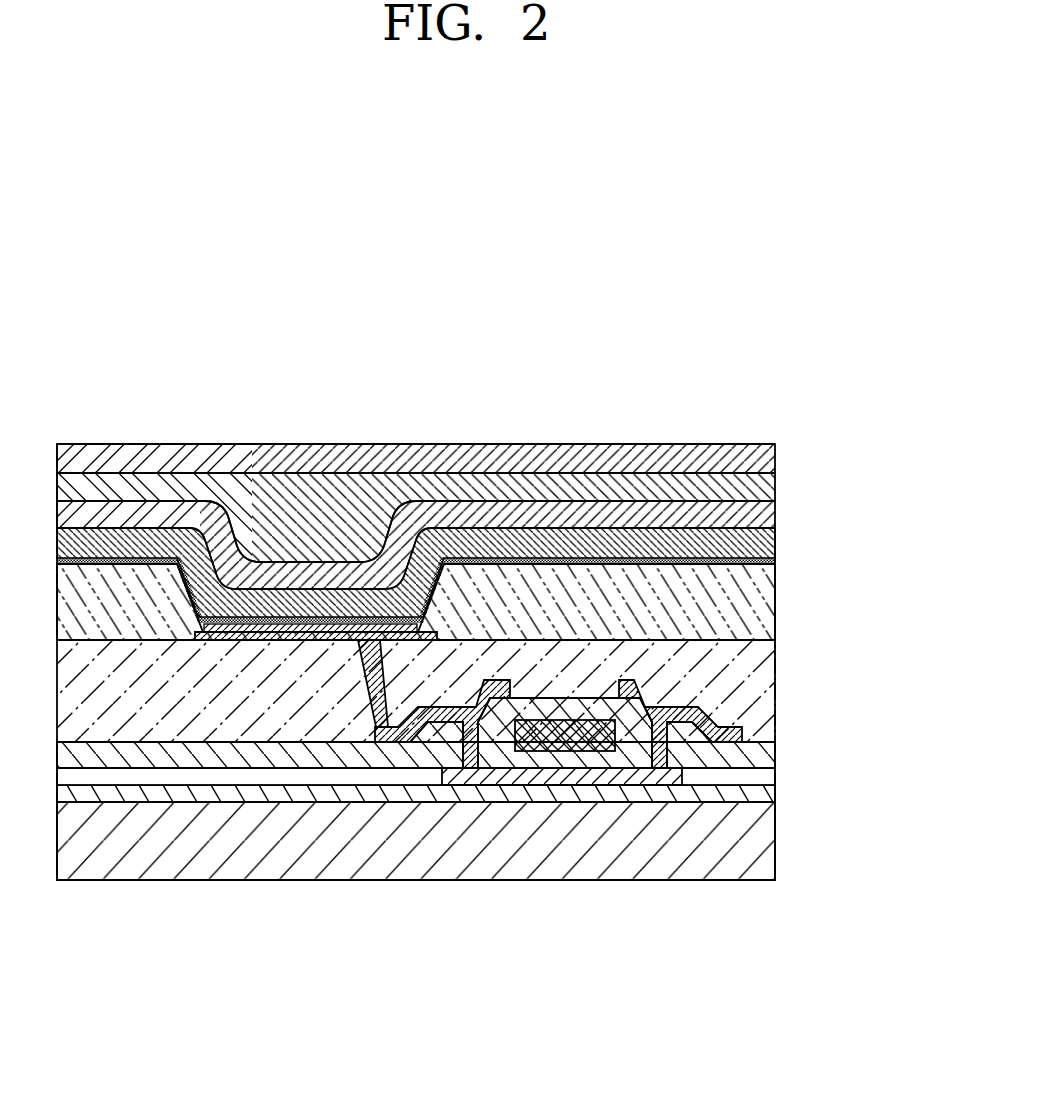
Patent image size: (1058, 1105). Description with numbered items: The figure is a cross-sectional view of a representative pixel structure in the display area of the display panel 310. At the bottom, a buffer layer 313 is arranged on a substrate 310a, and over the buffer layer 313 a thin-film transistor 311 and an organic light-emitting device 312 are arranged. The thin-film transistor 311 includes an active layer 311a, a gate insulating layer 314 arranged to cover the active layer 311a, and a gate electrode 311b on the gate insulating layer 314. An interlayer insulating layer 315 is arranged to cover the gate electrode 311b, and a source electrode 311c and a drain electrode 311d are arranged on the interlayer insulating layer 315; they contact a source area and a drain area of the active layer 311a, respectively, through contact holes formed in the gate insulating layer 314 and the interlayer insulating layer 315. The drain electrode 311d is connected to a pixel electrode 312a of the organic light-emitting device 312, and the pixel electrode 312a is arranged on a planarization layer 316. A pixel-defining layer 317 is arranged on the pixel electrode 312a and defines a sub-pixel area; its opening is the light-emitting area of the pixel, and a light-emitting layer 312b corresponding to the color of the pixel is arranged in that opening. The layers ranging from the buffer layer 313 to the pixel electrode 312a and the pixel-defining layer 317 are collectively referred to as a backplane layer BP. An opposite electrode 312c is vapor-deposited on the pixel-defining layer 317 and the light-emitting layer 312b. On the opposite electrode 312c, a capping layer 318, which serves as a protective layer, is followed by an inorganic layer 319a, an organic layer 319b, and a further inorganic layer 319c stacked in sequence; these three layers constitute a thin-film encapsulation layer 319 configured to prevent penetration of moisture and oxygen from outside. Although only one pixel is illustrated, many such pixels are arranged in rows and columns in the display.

The display panel 310 is at (782, 404).
The substrate 310a is at (762, 850).
The thin-film transistor 311 is at (558, 660).
The active layer 311a is at (528, 775).
The gate electrode 311b is at (583, 751).
The source electrode 311c is at (660, 752).
The drain electrode 311d is at (457, 756).
The organic light-emitting device 312 is at (416, 555).
The pixel electrode 312a is at (318, 636).
The light-emitting layer 312b is at (360, 637).
The opposite electrode 312c is at (512, 558).
The buffer layer 313 is at (762, 796).
The gate insulating layer 314 is at (762, 776).
The interlayer insulating layer 315 is at (762, 754).
The planarization layer 316 is at (762, 696).
The pixel-defining layer 317 is at (454, 602).
The capping layer 318 is at (762, 541).
The thin-film encapsulation layer 319 is at (490, 516).
The inorganic layer 319a is at (762, 513).
The organic layer 319b is at (762, 484).
The inorganic layer 319c is at (762, 457).
The backplane layer BP is at (477, 695).